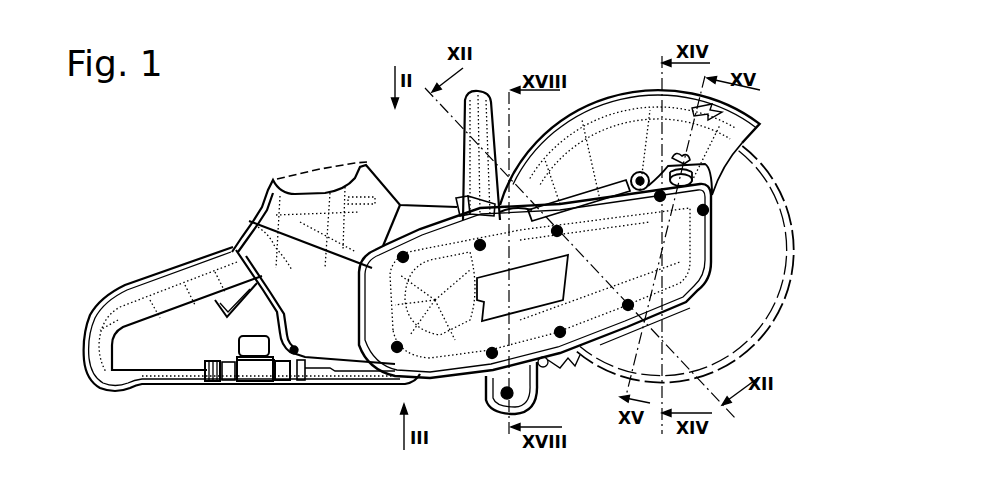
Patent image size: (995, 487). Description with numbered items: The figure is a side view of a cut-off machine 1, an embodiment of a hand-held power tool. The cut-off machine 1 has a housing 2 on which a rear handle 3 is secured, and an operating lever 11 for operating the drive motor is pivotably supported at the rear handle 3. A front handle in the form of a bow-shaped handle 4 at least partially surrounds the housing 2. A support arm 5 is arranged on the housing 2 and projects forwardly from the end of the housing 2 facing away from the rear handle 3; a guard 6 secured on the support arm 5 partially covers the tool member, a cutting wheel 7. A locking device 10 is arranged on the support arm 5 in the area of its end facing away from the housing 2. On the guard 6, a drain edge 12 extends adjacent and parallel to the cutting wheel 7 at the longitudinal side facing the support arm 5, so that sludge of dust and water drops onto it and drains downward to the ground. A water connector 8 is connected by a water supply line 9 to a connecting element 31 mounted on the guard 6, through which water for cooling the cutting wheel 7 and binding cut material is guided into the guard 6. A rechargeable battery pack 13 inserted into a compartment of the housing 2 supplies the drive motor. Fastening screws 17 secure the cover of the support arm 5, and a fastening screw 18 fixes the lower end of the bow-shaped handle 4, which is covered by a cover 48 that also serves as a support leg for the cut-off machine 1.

The cut-off machine 1 is at (193, 173).
The housing 2 is at (316, 212).
The handle 3 is at (185, 278).
The bow-shaped handle 4 is at (468, 160).
The support arm 5 is at (464, 360).
The guard 6 is at (618, 127).
The cutting wheel 7 is at (757, 305).
The water connector 8 is at (208, 374).
The water supply line 9 is at (357, 372).
The locking device 10 is at (674, 172).
The operating lever 11 is at (221, 302).
The drain edge 12 is at (593, 347).
The rechargeable battery pack 13 is at (330, 165).
The fastening screws 17 is at (404, 251).
The fastening screw 18 is at (501, 399).
The connecting element 31 is at (632, 176).
The cover 48 is at (497, 417).